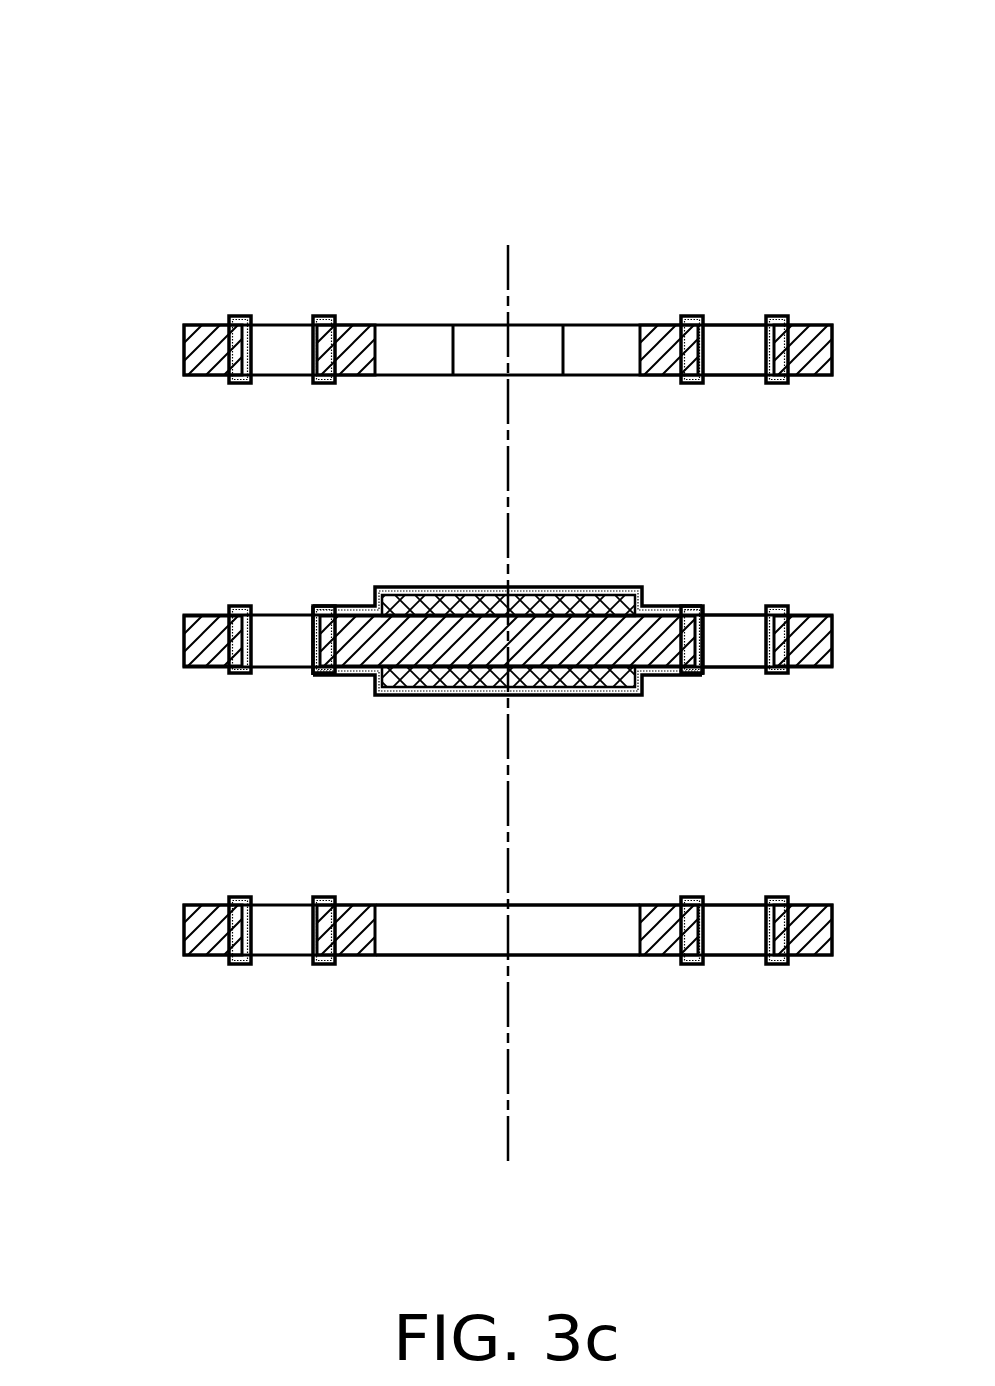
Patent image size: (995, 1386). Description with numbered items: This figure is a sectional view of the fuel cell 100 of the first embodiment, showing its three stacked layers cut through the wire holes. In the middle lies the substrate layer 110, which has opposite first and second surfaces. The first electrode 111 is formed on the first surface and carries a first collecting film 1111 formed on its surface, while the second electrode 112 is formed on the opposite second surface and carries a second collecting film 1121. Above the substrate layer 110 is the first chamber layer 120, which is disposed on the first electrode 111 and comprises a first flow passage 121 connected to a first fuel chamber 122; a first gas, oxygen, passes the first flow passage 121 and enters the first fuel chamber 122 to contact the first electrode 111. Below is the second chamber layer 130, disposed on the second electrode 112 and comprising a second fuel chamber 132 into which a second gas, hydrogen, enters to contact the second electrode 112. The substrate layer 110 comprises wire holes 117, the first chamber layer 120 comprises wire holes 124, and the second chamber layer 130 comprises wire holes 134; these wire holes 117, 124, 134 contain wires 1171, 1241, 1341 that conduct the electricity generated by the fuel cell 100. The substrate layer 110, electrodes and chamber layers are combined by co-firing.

The fuel cell 100 is at (90, 48).
The substrate layer 110 is at (468, 642).
The first electrode 111 is at (534, 547).
The first collecting film 1111 is at (563, 587).
The second electrode 112 is at (524, 736).
The second collecting film 1121 is at (552, 695).
The wire holes 117 is at (732, 653).
The wires 1171 is at (778, 605).
The first chamber layer 120 is at (468, 343).
The first flow passage 121 is at (482, 340).
The first fuel chamber 122 is at (603, 340).
The wire holes 124 is at (732, 363).
The wires 1241 is at (777, 318).
The second chamber layer 130 is at (468, 922).
The second fuel chamber 132 is at (553, 942).
The wire holes 134 is at (732, 942).
The wires 1341 is at (777, 898).